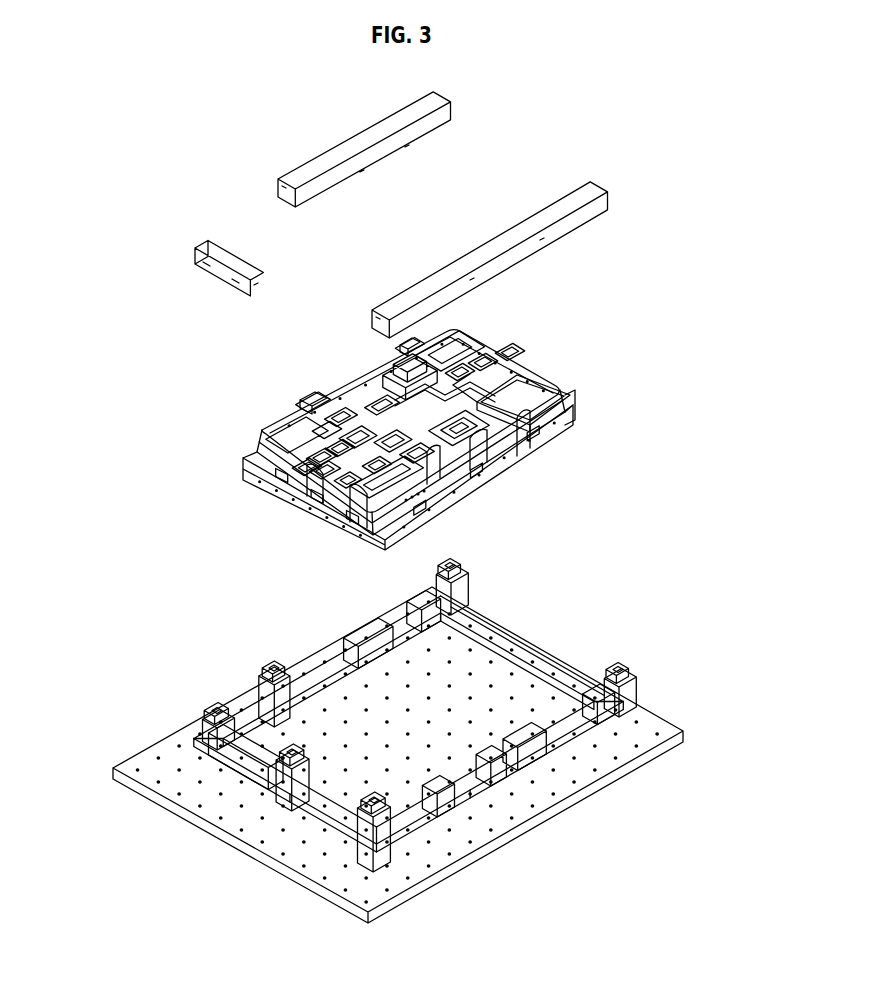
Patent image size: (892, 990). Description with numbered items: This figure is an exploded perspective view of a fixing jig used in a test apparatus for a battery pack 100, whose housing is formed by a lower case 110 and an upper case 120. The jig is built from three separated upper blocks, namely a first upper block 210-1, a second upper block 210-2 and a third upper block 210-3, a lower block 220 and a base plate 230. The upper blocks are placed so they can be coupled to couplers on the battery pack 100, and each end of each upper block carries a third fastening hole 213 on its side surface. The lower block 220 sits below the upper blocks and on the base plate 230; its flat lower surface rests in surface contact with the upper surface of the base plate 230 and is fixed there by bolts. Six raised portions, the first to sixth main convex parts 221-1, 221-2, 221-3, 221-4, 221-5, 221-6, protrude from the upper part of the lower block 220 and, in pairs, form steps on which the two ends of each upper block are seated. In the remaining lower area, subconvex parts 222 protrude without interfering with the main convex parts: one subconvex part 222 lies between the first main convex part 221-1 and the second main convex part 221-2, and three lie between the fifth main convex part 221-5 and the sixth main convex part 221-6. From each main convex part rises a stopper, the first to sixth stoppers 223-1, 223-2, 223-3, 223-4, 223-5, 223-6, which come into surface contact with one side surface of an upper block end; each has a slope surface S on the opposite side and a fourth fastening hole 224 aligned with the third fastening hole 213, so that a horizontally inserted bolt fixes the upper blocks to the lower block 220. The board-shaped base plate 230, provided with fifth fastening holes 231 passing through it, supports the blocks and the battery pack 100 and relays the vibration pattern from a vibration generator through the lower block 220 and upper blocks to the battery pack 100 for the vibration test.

The battery pack 100 is at (419, 440).
The lower case 110 is at (520, 463).
The upper case 120 is at (548, 398).
The first upper block 210-1 is at (355, 142).
The second upper block 210-2 is at (208, 243).
The third upper block 210-3 is at (488, 248).
The third fastening hole 213 is at (283, 188).
The lower block 220 is at (395, 756).
The first main convex part 221-1 is at (457, 618).
The second main convex part 221-2 is at (297, 693).
The third main convex part 221-3 is at (220, 758).
The fourth main convex part 221-4 is at (255, 775).
The fifth main convex part 221-5 is at (392, 825).
The sixth main convex part 221-6 is at (602, 712).
The subconvex part 222 is at (368, 650).
The first stopper 223-1 is at (458, 598).
The second stopper 223-2 is at (271, 683).
The third stopper 223-3 is at (202, 733).
The fourth stopper 223-4 is at (290, 775).
The fifth stopper 223-5 is at (383, 825).
The sixth stopper 223-6 is at (626, 693).
The fourth fastening hole 224 is at (438, 586).
The base plate 230 is at (432, 755).
The fifth fastening hole 231 is at (433, 865).
The slope surface S is at (267, 705).